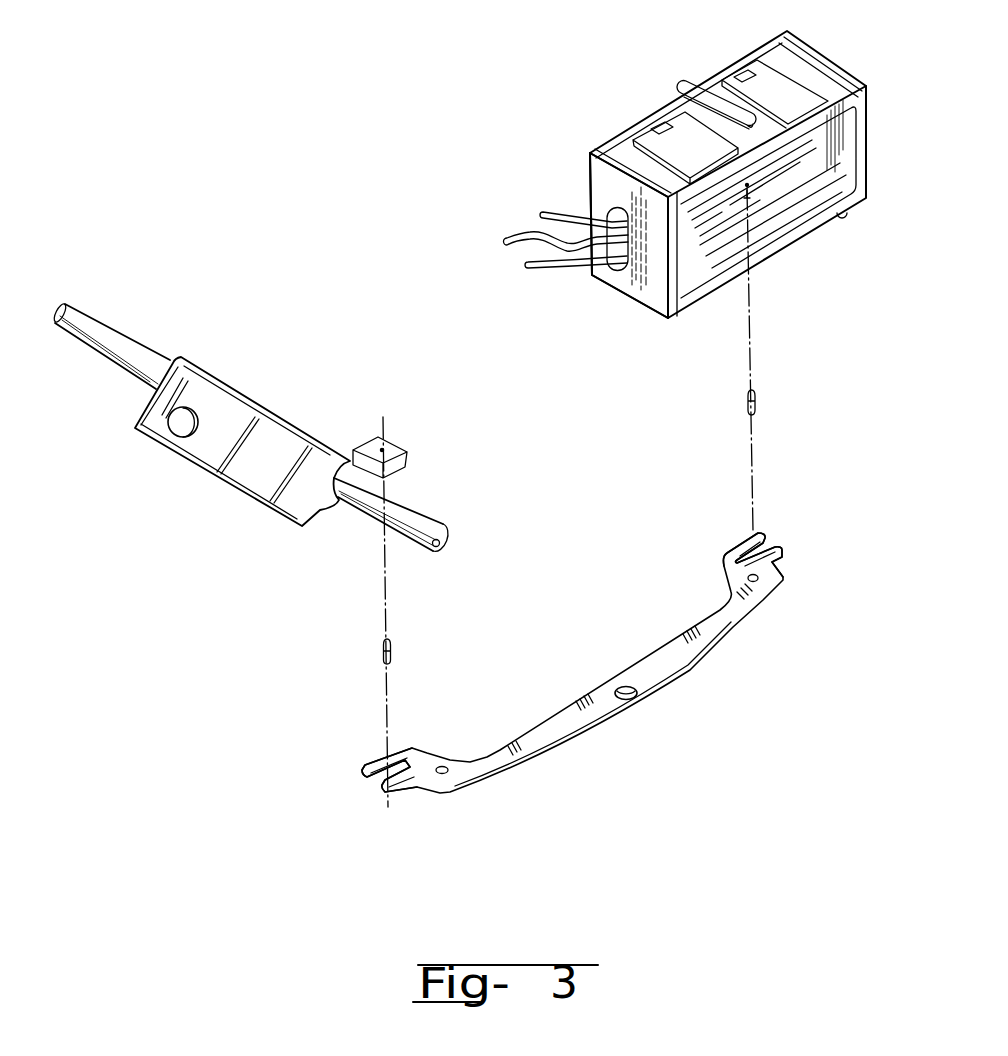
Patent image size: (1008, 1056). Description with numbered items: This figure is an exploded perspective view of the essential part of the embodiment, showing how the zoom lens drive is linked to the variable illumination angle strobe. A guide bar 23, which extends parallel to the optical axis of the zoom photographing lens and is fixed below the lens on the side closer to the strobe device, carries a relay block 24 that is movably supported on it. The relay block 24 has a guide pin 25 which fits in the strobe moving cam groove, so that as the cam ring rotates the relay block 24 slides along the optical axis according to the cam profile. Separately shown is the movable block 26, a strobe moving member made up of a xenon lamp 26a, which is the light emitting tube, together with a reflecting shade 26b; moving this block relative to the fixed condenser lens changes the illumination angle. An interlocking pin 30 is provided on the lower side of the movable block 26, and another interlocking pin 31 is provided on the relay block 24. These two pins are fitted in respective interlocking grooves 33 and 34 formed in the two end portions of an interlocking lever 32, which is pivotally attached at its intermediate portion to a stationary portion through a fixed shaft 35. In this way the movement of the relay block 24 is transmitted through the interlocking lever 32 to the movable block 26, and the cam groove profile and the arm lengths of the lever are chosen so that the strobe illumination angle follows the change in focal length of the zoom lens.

The guide bar 23 is at (423, 523).
The relay block 24 is at (312, 462).
The guide pin 25 is at (182, 412).
The movable block 26 is at (700, 90).
The xenon lamp 26a is at (713, 196).
The reflecting shade 26b is at (642, 277).
The interlocking pin 30 is at (757, 403).
The interlocking pin 31 is at (379, 656).
The interlocking lever 32 is at (690, 670).
The interlocking groove 33 is at (757, 543).
The interlocking groove 34 is at (383, 777).
The fixed shaft 35 is at (632, 699).